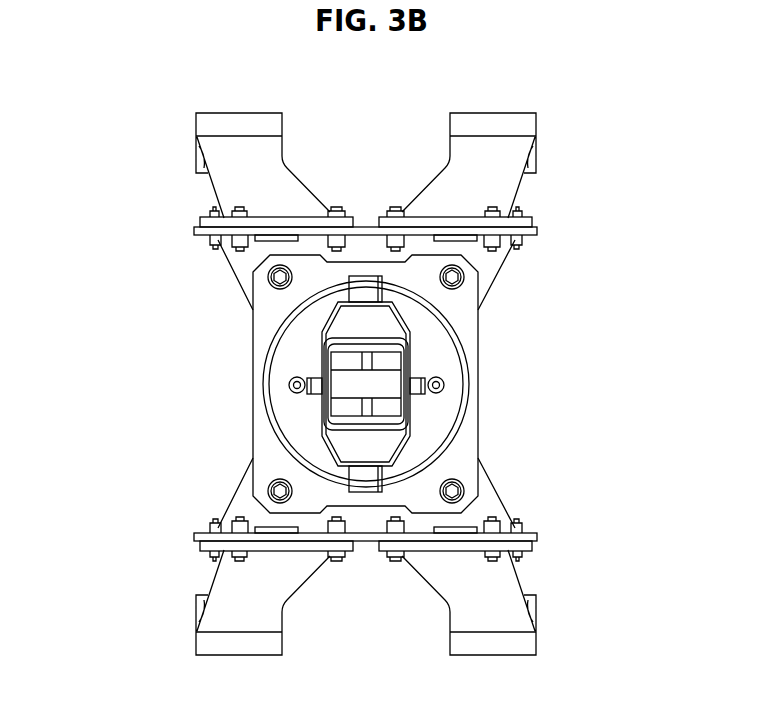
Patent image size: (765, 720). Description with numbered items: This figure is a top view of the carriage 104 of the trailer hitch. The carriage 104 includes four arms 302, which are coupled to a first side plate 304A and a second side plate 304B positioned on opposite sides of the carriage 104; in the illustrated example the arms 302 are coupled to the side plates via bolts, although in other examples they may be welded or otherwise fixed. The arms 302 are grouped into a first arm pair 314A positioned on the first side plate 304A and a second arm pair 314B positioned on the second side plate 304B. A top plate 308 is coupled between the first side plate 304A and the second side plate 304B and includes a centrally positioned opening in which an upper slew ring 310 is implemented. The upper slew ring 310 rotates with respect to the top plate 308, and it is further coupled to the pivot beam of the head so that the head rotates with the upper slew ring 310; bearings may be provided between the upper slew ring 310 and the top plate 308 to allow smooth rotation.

The carriage 104 is at (160, 66).
The arms 302 is at (218, 112).
The first side plate 304A is at (538, 232).
The second side plate 304B is at (540, 535).
The top plate 308 is at (478, 348).
The upper slew ring 310 is at (460, 413).
The first arm pair 314A is at (408, 172).
The second arm pair 314B is at (408, 577).